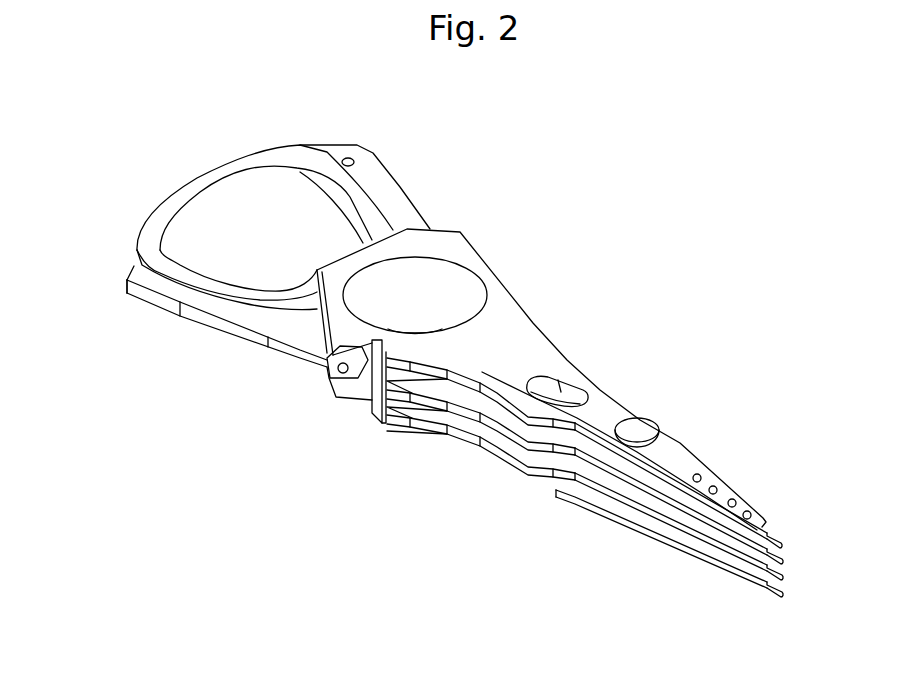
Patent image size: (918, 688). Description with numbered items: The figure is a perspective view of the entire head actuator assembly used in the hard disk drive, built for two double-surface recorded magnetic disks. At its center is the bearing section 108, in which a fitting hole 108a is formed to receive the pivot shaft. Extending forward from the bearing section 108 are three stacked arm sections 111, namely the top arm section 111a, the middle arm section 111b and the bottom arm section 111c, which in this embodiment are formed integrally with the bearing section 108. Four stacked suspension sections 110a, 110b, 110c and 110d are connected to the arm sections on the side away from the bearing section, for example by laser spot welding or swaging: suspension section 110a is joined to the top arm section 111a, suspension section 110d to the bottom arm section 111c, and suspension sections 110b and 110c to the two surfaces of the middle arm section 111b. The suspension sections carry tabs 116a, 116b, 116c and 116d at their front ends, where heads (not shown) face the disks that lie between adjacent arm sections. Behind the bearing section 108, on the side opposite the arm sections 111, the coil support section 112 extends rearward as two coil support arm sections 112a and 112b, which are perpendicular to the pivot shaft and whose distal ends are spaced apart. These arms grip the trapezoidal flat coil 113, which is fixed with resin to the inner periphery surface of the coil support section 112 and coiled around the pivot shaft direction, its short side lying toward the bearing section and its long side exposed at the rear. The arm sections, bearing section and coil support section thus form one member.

The bearing section 108 is at (540, 282).
The fitting hole 108a is at (445, 293).
The suspension section 110a is at (725, 493).
The suspension section 110b is at (667, 503).
The suspension section 110c is at (703, 535).
The suspension section 110d is at (717, 562).
The arm sections 111 is at (690, 421).
The arm section 111a is at (445, 372).
The arm section 111b is at (487, 415).
The arm section 111c is at (563, 478).
The coil support section 112 is at (308, 384).
The coil support arm section 112a is at (127, 283).
The coil support arm section 112b is at (370, 163).
The flat coil 113 is at (215, 177).
The tab 116a is at (781, 535).
The tab 116b is at (783, 559).
The tab 116c is at (788, 576).
The tab 116d is at (781, 592).